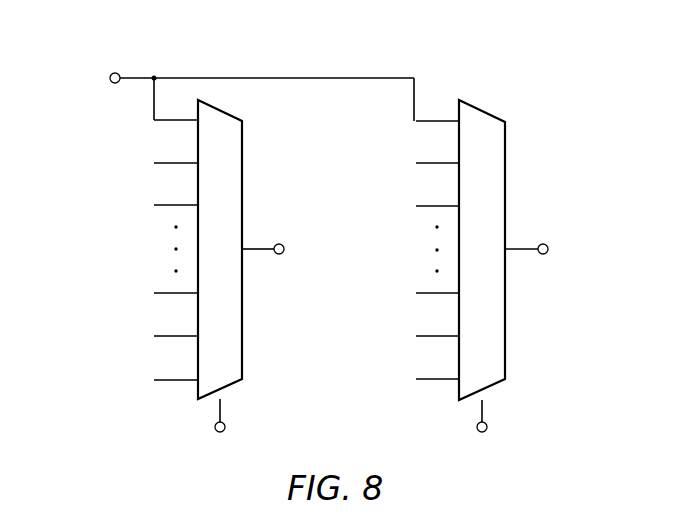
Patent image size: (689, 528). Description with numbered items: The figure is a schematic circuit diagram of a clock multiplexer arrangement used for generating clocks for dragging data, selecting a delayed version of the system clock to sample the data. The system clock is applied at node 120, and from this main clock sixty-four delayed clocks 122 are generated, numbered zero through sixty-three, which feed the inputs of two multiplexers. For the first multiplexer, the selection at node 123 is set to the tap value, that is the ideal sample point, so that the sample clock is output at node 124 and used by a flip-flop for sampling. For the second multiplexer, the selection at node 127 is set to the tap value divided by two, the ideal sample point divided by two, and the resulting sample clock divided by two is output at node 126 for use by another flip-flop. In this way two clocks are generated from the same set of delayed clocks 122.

The system clock node 120 is at (113, 73).
The delayed clocks 122 is at (420, 402).
The selection node 123 is at (225, 430).
The sample point clock output node 124 is at (281, 243).
The half sample point clock output node 126 is at (545, 243).
The selection node 127 is at (487, 430).